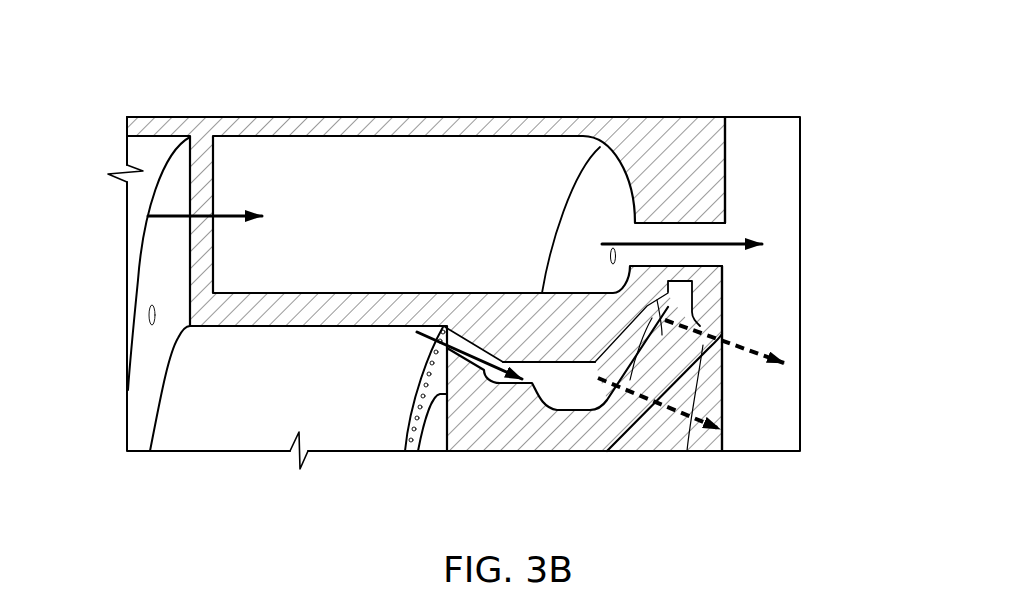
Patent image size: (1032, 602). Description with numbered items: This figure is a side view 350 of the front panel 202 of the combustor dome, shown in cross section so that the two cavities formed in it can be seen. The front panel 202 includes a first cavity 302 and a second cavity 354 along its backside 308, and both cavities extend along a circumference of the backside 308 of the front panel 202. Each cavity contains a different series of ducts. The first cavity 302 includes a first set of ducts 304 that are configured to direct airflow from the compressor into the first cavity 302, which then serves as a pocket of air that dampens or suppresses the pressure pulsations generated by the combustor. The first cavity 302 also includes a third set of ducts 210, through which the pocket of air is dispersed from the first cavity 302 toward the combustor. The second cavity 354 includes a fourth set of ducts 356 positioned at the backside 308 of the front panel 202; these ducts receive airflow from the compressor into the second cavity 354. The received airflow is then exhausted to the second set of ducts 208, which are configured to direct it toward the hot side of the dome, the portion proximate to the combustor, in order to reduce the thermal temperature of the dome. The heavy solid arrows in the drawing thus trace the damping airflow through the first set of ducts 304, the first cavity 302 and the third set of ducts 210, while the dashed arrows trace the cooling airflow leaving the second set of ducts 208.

The front panel 202 is at (806, 313).
The second set of ducts 208 is at (716, 412).
The third set of ducts 210 is at (747, 233).
The first cavity 302 is at (342, 128).
The first set of ducts 304 is at (203, 208).
The backside 308 is at (116, 274).
The side view 350 is at (838, 267).
The second cavity 354 is at (604, 416).
The fourth set of ducts 356 is at (465, 365).